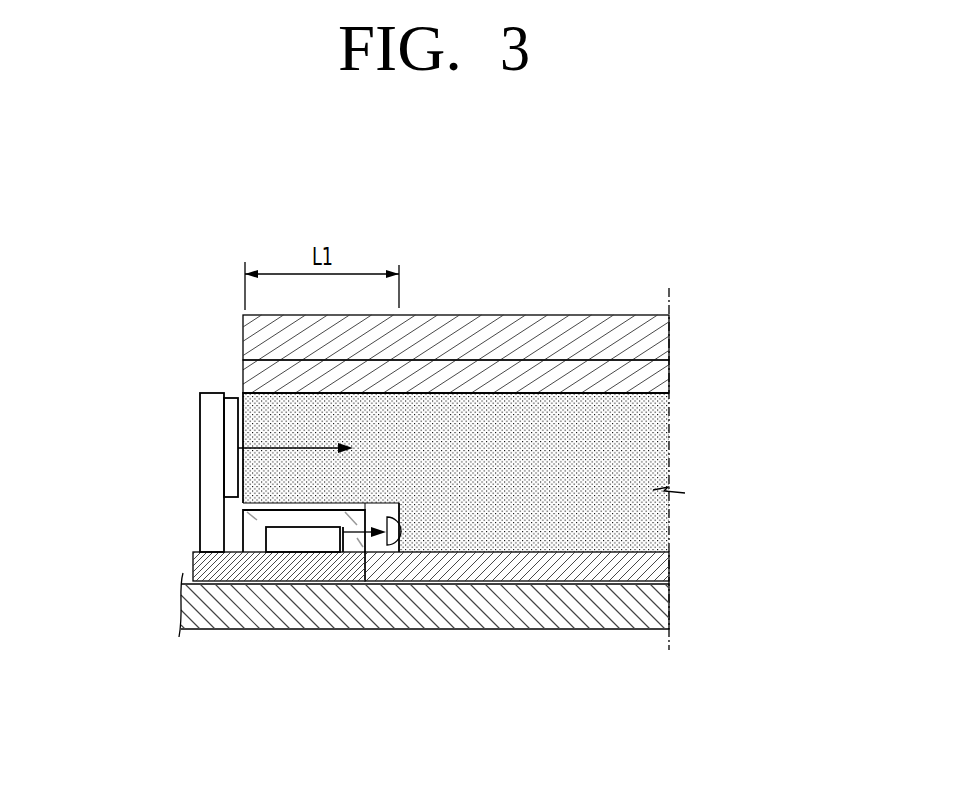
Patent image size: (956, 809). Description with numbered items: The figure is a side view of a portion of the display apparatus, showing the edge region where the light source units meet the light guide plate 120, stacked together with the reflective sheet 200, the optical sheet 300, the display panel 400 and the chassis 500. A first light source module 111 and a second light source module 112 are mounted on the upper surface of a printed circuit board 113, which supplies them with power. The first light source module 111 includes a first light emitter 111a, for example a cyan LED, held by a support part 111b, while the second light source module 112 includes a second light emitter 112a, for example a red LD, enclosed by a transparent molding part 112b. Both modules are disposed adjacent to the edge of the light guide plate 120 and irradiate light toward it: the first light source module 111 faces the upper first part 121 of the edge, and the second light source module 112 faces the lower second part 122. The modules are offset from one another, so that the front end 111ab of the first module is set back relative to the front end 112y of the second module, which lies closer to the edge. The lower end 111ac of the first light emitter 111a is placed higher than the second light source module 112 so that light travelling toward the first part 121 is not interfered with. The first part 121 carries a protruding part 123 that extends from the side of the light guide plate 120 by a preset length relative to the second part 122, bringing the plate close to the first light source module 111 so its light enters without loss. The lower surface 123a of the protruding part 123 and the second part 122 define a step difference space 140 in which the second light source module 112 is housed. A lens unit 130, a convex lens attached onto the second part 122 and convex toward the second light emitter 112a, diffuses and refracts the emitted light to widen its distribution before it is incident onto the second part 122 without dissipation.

The first light source module 111 is at (175, 392).
The first light emitter 111a is at (232, 398).
The support part 111b is at (210, 400).
The front end of the first light source module 111ab is at (235, 413).
The lower end of the first light emitter 111ac is at (233, 488).
The second light source module 112 is at (324, 633).
The second light emitter 112a is at (322, 545).
The molding part 112b is at (258, 547).
The front end of the second light source module 112y is at (358, 542).
The printed circuit board 113 is at (203, 572).
The light guide plate 120 is at (657, 461).
The first part 121 is at (238, 437).
The second part 122 is at (403, 525).
The protruding part 123 is at (360, 427).
The lower surface of the protruding part 123a is at (372, 503).
The lens unit 130 is at (410, 545).
The step difference space 140 is at (384, 507).
The reflective sheet 200 is at (657, 569).
The optical sheet 300 is at (657, 379).
The display panel 400 is at (657, 338).
The chassis 500 is at (657, 613).